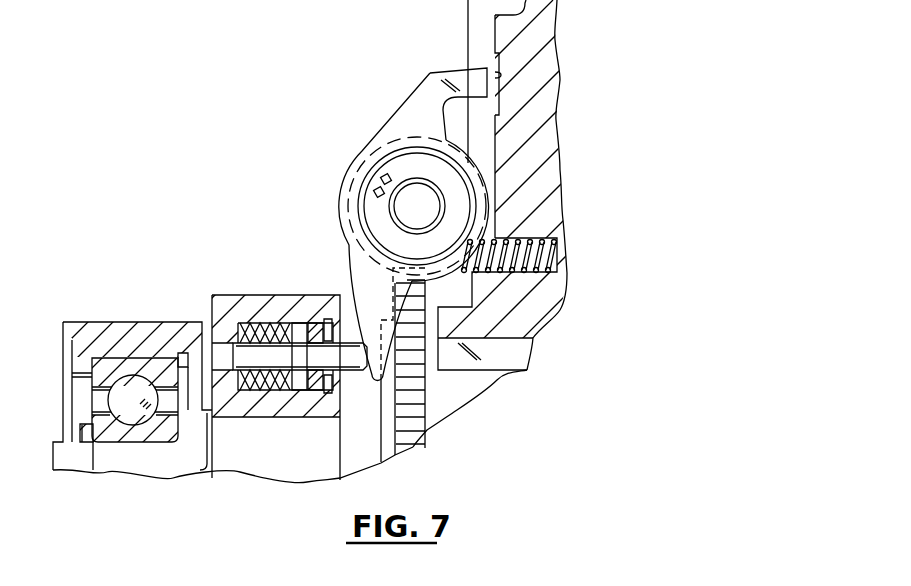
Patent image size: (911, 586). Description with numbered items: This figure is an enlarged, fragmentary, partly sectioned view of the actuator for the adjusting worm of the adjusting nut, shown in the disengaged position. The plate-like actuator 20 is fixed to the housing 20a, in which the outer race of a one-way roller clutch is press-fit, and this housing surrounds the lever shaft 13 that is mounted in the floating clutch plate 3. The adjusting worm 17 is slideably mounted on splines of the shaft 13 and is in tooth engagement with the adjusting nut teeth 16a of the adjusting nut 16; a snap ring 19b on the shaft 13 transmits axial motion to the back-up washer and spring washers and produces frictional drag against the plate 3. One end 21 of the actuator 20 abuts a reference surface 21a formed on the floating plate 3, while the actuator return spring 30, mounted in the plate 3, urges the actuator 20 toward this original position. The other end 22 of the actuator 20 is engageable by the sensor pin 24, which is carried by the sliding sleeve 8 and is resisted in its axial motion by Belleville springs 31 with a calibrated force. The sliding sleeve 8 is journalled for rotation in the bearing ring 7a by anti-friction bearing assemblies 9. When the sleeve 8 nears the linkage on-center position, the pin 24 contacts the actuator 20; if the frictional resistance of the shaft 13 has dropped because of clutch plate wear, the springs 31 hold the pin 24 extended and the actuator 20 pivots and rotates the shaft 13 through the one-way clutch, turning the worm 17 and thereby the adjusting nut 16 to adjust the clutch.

The floating clutch plate 3 is at (534, 174).
The bearing ring 7a is at (88, 300).
The sliding sleeve 8 is at (220, 294).
The anti-friction bearing assemblies 9 is at (133, 383).
The lever shaft 13 is at (402, 208).
The adjusting nut 16 is at (417, 433).
The adjusting nut teeth 16a is at (415, 411).
The adjusting worm 17 is at (488, 207).
The snap ring 19b is at (388, 177).
The actuator 20 is at (391, 112).
The housing 20a is at (443, 178).
The actuator end 21 is at (468, 67).
The reference surface 21a is at (500, 75).
The actuator end 22 is at (373, 381).
The sensor pin 24 is at (300, 315).
The actuator return spring 30 is at (557, 247).
The Belleville springs 31 is at (284, 322).